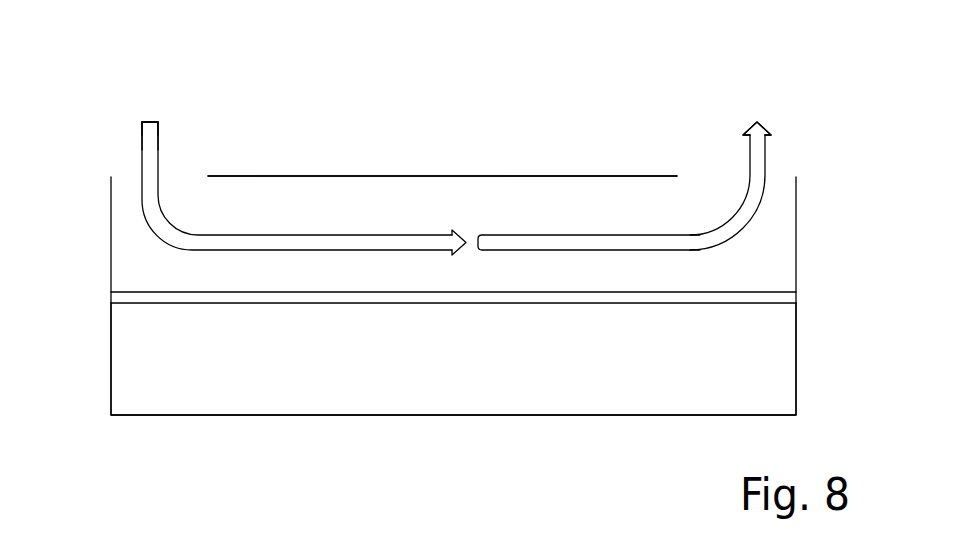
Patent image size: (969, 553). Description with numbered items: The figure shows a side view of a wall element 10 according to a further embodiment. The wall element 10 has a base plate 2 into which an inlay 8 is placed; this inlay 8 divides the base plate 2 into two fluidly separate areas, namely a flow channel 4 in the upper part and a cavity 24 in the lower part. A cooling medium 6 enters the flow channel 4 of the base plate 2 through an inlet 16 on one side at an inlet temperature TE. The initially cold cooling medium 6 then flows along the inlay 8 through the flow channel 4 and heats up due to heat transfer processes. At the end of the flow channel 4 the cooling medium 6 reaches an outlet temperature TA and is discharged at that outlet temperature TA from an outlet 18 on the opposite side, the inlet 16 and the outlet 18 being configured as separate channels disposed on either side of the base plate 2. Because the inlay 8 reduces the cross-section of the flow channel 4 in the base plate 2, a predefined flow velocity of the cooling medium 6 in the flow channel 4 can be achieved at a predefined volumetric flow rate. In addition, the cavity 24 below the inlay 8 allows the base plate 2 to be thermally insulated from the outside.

The base plate 2 is at (796, 250).
The flow channel 4 is at (475, 201).
The cooling medium 6 is at (273, 241).
The inlay 8 is at (595, 301).
The wall element 10 is at (323, 139).
The inlet 16 is at (128, 185).
The outlet 18 is at (703, 185).
The cavity 24 is at (457, 368).
The inlet temperature TE is at (150, 132).
The outlet temperature TA is at (757, 121).